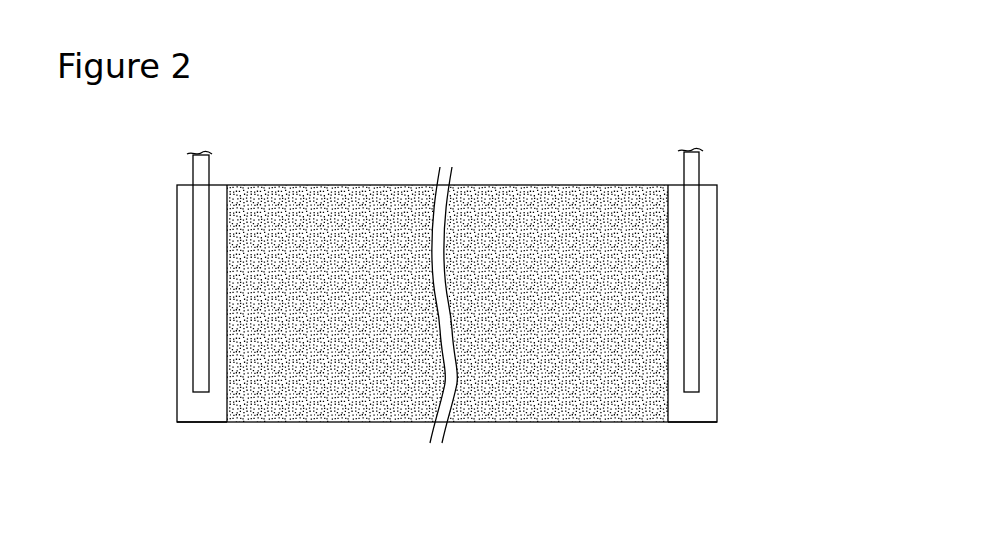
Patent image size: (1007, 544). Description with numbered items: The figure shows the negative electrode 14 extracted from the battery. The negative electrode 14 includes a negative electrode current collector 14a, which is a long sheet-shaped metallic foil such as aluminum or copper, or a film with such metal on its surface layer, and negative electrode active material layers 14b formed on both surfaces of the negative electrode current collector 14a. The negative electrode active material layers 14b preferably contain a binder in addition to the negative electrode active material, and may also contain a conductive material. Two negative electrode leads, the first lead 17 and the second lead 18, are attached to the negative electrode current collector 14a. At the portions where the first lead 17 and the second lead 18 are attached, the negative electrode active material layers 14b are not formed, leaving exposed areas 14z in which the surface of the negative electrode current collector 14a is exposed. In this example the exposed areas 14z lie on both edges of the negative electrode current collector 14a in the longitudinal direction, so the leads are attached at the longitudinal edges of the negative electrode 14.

The negative electrode 14 is at (468, 287).
The negative electrode current collector 14a is at (717, 302).
The negative electrode active material layers 14b is at (358, 405).
The exposed areas 14z is at (200, 412).
The first lead 17 is at (200, 167).
The second lead 18 is at (696, 167).